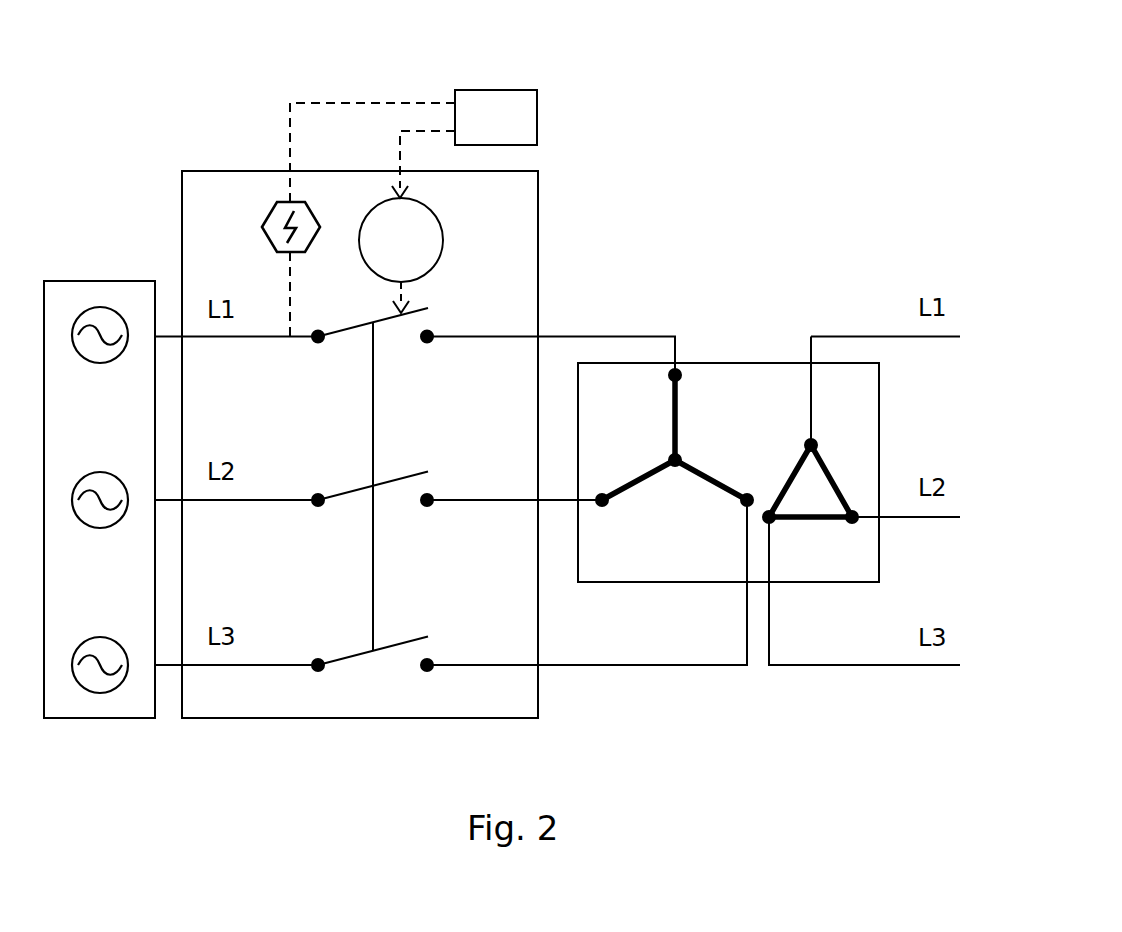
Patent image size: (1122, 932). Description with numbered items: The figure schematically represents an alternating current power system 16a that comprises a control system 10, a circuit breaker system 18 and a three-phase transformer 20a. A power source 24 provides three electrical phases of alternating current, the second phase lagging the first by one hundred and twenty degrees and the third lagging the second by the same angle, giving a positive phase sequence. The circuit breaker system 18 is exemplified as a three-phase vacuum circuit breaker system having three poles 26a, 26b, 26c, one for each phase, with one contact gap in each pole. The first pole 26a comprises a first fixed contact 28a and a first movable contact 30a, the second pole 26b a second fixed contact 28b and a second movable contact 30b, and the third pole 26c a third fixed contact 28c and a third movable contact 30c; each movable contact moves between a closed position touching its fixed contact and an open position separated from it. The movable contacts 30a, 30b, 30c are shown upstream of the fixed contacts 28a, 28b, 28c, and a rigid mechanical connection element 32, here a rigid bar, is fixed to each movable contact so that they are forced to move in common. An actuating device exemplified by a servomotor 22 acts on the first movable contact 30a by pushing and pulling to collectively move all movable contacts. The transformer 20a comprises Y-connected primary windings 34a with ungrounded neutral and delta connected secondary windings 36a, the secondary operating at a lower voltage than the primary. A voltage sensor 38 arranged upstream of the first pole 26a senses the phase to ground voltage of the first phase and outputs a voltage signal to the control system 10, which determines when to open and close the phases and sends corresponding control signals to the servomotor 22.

The control system 10 is at (511, 131).
The power system 16a is at (222, 62).
The circuit breaker system 18 is at (511, 213).
The three-phase transformer 20a is at (711, 326).
The servomotor 22 is at (415, 256).
The power source 24 is at (95, 243).
The first pole 26a is at (462, 292).
The second pole 26b is at (462, 456).
The third pole 26c is at (462, 621).
The first fixed contact 28a is at (433, 333).
The second fixed contact 28b is at (433, 497).
The third fixed contact 28c is at (433, 662).
The first movable contact 30a is at (349, 323).
The second movable contact 30b is at (349, 487).
The third movable contact 30c is at (349, 655).
The mechanical connection element 32 is at (376, 387).
The primary windings 34a is at (672, 417).
The secondary windings 36a is at (828, 462).
The voltage sensor 38 is at (275, 219).